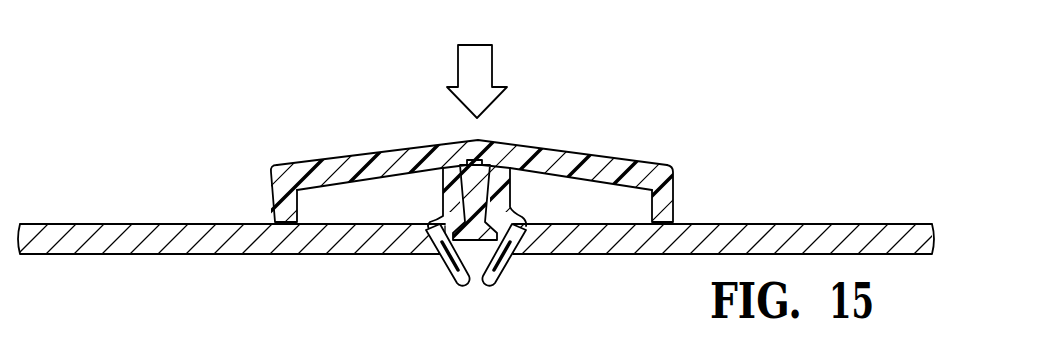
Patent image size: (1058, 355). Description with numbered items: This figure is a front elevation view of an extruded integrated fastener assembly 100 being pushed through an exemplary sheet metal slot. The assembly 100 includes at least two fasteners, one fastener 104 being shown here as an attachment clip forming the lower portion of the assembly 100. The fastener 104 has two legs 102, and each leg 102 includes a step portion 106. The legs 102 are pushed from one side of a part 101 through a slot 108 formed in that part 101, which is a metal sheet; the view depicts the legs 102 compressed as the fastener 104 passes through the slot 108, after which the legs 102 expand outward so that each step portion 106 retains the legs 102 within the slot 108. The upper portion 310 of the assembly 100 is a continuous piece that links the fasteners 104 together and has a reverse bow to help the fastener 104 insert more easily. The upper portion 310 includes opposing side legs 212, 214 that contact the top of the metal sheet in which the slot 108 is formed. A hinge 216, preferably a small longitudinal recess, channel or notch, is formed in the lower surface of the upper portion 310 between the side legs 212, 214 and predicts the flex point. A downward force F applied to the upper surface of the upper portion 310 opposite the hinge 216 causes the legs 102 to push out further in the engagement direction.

The extruded integrated fastener assembly 100 is at (475, 144).
The part 101 is at (875, 223).
The legs 102 is at (447, 264).
The fastener 104 is at (430, 292).
The step portion 106 is at (425, 230).
The slot 108 is at (516, 225).
The side leg 212 is at (672, 203).
The side leg 214 is at (272, 200).
The hinge 216 is at (483, 141).
The upper portion 310 is at (592, 157).
The downward force F is at (458, 70).